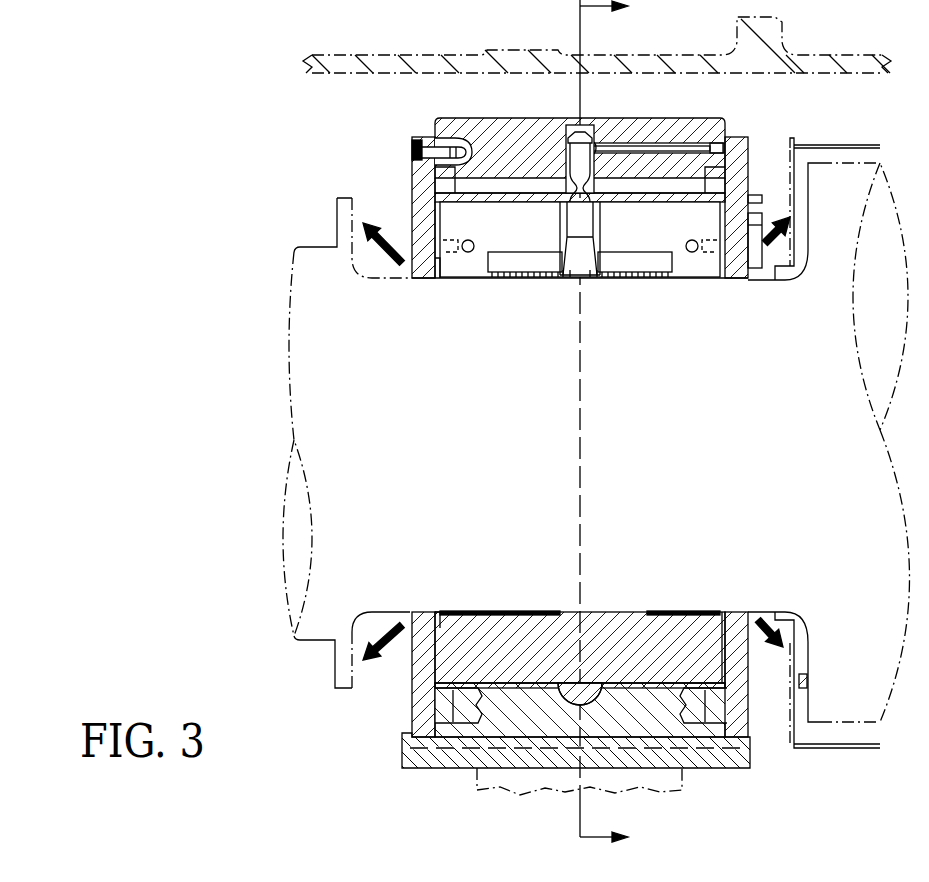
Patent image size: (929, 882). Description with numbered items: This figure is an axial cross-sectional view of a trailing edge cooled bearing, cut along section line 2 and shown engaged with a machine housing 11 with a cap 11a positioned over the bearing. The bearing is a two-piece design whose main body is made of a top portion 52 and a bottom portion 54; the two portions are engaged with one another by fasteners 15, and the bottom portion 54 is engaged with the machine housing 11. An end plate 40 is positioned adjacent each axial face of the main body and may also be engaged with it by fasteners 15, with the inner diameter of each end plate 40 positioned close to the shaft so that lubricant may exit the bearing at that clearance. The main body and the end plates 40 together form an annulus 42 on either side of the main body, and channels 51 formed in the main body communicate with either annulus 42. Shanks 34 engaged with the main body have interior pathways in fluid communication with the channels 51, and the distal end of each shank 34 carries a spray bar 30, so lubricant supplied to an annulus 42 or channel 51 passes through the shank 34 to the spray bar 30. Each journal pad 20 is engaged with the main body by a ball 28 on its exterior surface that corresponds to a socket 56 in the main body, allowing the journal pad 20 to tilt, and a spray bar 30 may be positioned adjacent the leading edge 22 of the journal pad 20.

The section line 2- 2 is at (612, 428).
The cap 11a is at (680, 62).
The machine housing 11 is at (410, 764).
The fastener 15 is at (433, 142).
The journal pad 20 is at (540, 632).
The leading edge 22 is at (458, 280).
The ball 28 is at (605, 700).
The spray bar 30 is at (518, 258).
The shank 34 is at (590, 250).
The end plate 40 is at (415, 205).
The annulus 42 is at (441, 180).
The channel 51 is at (668, 185).
The top portion 52 is at (512, 138).
The bottom portion 54 is at (676, 794).
The socket 56 is at (578, 700).